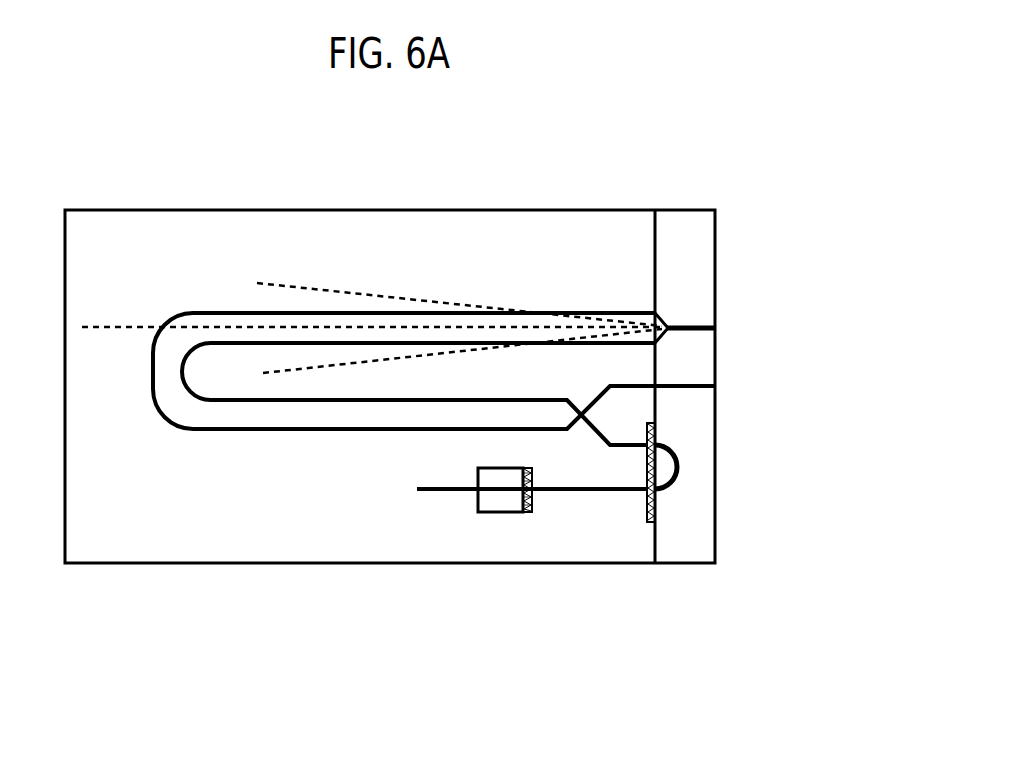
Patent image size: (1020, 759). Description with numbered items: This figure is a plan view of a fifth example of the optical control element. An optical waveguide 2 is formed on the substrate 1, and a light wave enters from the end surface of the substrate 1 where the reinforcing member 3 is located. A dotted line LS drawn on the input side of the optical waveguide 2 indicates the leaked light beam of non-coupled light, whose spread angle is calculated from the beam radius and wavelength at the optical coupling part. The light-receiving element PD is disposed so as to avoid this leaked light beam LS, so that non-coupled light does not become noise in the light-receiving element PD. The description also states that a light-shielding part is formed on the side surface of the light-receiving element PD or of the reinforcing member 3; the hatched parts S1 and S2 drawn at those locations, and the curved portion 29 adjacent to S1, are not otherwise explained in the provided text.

The substrate 1 is at (523, 240).
The optical waveguide 2 is at (252, 438).
The reinforcing member 3 is at (685, 255).
The leaked light beam LS is at (321, 290).
The light-receiving element PD is at (500, 505).
The first reflecting surface S1 is at (657, 505).
The second reflecting surface S2 is at (532, 503).
The U-turn waveguide portion 29 is at (683, 465).